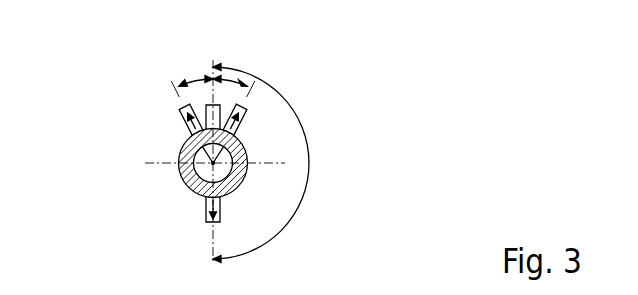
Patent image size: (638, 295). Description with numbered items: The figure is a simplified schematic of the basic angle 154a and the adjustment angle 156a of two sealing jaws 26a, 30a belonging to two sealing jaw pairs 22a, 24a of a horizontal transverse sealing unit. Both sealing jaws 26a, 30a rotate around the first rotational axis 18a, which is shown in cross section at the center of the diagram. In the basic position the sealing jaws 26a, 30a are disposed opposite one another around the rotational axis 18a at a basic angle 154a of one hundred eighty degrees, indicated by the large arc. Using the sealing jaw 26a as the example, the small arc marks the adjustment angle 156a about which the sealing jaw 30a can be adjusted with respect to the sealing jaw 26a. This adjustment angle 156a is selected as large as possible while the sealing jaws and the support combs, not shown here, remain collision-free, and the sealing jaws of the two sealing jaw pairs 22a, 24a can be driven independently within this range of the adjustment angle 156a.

The first rotational axis 18a is at (190, 161).
The first sealing jaw pair 22a is at (172, 125).
The second sealing jaw pair 24a is at (172, 205).
The sealing jaw 26a is at (192, 105).
The sealing jaw 30a is at (206, 222).
The basic angle 154a is at (309, 158).
The adjustment angle 156a is at (201, 79).